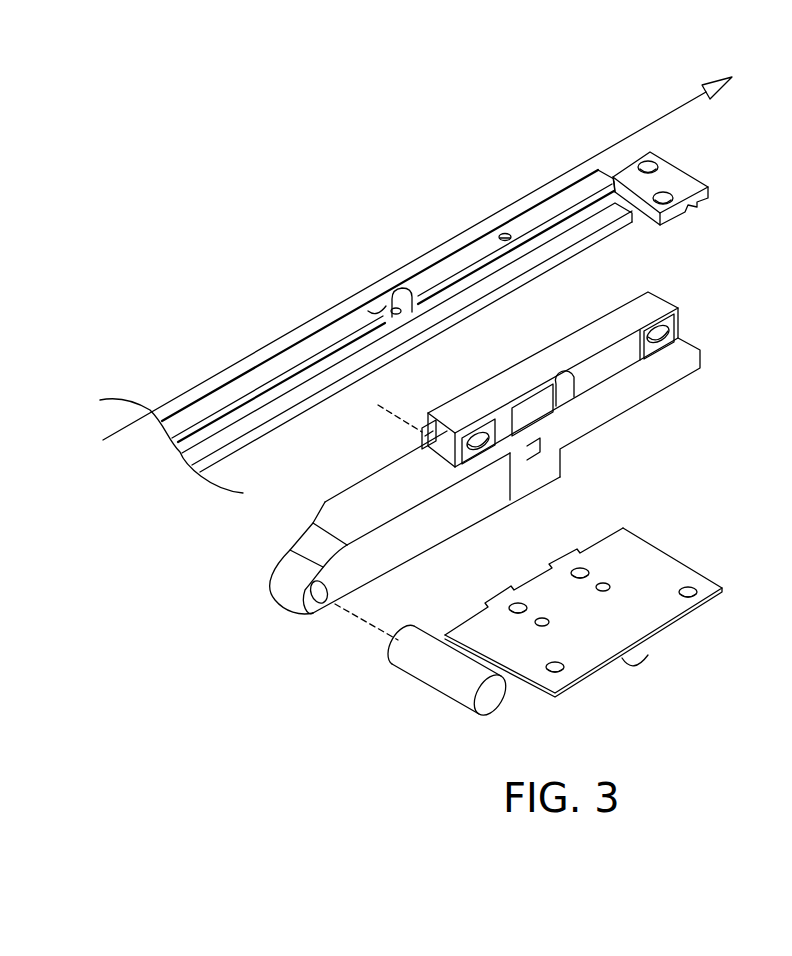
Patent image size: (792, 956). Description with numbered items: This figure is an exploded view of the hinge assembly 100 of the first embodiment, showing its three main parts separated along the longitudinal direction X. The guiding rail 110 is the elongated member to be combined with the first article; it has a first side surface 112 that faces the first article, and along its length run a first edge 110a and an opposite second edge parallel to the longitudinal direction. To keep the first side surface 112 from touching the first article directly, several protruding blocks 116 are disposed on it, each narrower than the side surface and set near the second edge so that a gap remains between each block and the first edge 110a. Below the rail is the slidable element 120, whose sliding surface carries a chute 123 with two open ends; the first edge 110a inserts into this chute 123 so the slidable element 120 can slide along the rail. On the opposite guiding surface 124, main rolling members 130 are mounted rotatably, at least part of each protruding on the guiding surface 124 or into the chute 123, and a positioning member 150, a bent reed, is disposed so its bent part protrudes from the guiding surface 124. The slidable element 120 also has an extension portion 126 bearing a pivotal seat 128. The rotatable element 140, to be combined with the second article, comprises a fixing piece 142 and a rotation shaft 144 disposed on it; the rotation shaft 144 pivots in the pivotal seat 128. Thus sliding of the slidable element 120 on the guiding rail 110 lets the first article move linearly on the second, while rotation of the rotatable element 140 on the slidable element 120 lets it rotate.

The hinge assembly 100 is at (452, 163).
The guiding rail 110 is at (676, 183).
The first edge 110a is at (626, 230).
The first side surface 112 is at (361, 350).
The protruding blocks 116 is at (330, 338).
The slidable element 120 is at (622, 321).
The chute 123 is at (440, 428).
The guiding surface 124 is at (639, 362).
The extension portion 126 is at (383, 493).
The pivotal seat 128 is at (283, 573).
The main rolling members 130 is at (701, 360).
The rotatable element 140 is at (664, 660).
The fixing piece 142 is at (653, 578).
The rotation shaft 144 is at (493, 693).
The positioning member 150 is at (570, 400).